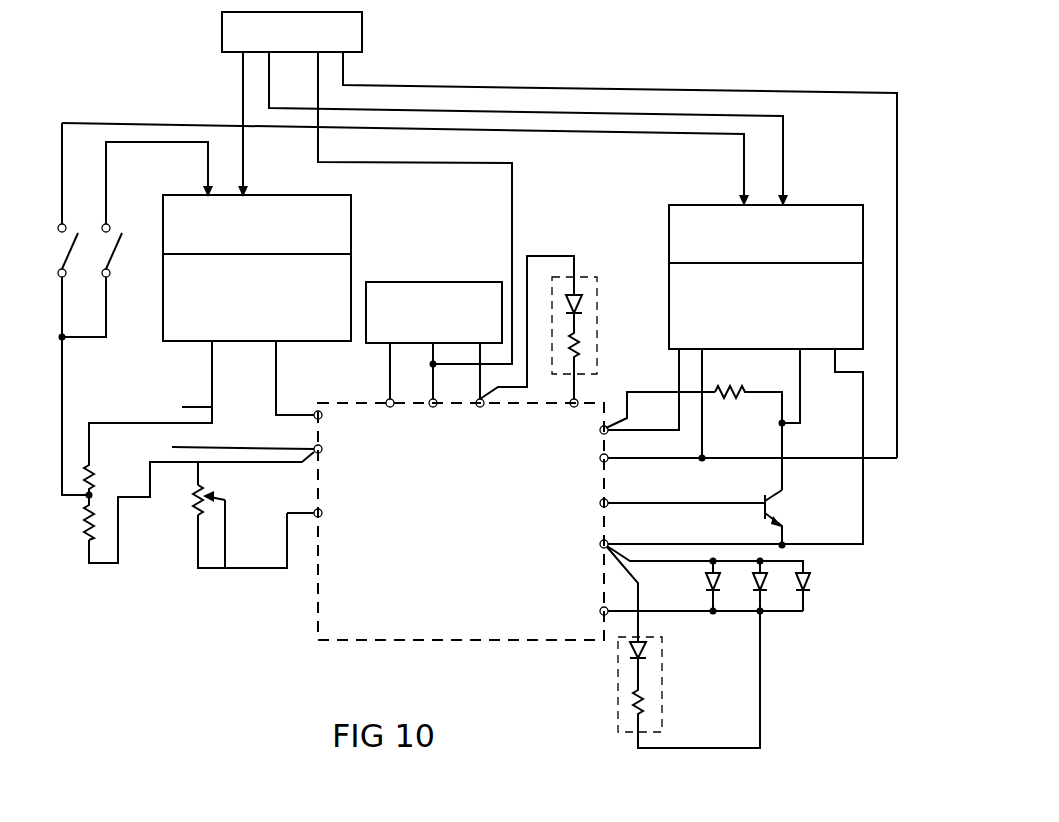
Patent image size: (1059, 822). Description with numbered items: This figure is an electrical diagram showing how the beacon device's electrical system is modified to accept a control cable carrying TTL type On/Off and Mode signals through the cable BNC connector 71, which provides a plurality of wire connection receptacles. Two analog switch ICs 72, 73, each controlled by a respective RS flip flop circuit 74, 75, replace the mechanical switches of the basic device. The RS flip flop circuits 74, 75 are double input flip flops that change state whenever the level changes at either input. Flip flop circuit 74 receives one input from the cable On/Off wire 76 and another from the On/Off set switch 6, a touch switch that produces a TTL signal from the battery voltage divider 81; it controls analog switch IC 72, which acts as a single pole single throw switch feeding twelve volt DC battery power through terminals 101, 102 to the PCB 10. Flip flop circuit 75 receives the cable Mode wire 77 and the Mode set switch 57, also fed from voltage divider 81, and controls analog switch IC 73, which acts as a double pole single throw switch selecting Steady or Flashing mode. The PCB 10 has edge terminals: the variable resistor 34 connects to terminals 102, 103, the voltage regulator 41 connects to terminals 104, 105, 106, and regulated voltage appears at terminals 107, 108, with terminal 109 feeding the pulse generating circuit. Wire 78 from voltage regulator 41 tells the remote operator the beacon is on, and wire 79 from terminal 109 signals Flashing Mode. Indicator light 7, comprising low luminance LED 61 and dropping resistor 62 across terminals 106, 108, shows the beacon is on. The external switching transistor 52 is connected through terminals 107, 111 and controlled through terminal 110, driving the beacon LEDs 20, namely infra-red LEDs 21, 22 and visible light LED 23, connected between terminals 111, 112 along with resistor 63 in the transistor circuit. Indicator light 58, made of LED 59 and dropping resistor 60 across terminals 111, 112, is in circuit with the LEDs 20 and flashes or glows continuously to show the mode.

The cable BNC connector 71 is at (362, 30).
The cable On/Off wire 76 is at (241, 80).
The cable Mode wire 77 is at (268, 72).
The cable Mode wire / mode status wire 79 is at (412, 86).
The wire from voltage regulator 78 is at (345, 162).
The RS flip flop circuit 74 is at (352, 200).
The analog switch IC 72 is at (350, 268).
The voltage regulator 41 is at (438, 282).
The RS flip flop circuit 75 is at (833, 203).
The analog switch IC 73 is at (865, 300).
The indicator light 7 is at (554, 247).
The LED 61 is at (580, 290).
The dropping resistor 62 is at (580, 347).
The Mode set switch 57 is at (97, 182).
The On/Off set switch 6 is at (140, 182).
The printed circuit board (PCB) 10 is at (425, 603).
The terminal 101 is at (299, 380).
The terminal 102 is at (247, 446).
The terminal 103 is at (302, 505).
The terminal 104 is at (376, 402).
The terminal 105 is at (417, 402).
The terminal 106 is at (463, 402).
The terminal 107 is at (640, 395).
The terminal 108 is at (558, 402).
The terminal 109 is at (731, 409).
The terminal 110 is at (665, 503).
The terminal 111 is at (715, 495).
The terminal 112 is at (685, 611).
The resistor 63 is at (727, 386).
The switching transistor 52 is at (778, 513).
The infra-red LED 21 is at (708, 588).
The infra-red LED 22 is at (752, 585).
The visible light LED 23 is at (815, 583).
The beacon LEDs 20 is at (729, 679).
The indicator light 58 is at (605, 698).
The LED 59 is at (650, 665).
The dropping resistor 60 is at (643, 712).
The battery voltage divider 81 is at (74, 509).
The variable resistor 34 is at (197, 548).